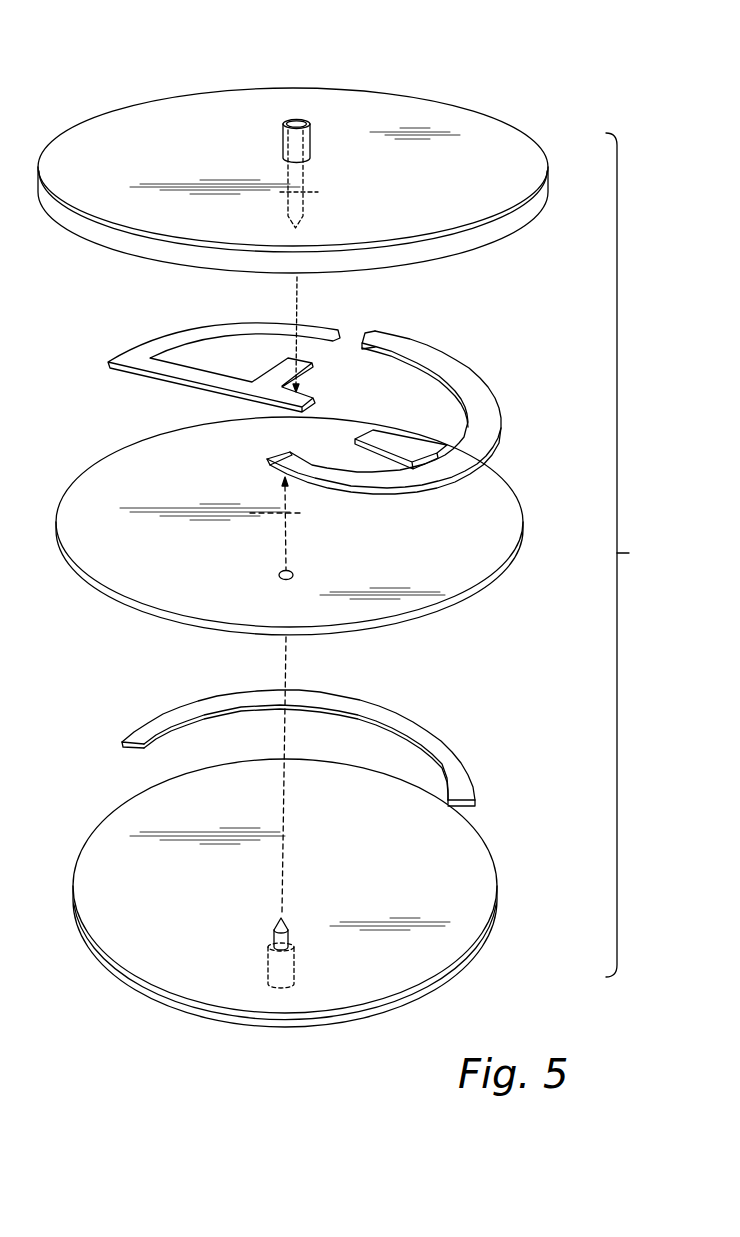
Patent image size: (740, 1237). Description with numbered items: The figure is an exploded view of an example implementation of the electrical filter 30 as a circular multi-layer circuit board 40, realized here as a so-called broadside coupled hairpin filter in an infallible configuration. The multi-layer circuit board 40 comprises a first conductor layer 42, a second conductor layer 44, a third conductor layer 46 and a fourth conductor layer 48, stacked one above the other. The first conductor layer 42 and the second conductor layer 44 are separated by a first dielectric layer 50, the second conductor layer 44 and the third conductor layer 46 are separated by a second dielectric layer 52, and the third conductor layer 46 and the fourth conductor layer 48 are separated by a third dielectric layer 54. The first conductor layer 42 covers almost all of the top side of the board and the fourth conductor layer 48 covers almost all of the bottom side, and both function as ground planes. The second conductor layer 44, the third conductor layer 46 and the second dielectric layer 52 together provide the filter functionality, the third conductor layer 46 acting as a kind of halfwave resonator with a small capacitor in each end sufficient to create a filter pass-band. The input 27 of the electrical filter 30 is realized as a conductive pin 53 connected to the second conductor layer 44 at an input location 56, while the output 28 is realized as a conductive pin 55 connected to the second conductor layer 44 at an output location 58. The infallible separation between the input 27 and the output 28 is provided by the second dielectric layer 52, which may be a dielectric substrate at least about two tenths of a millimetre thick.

The input 27 is at (298, 110).
The output 28 is at (277, 1040).
The electrical filter 30 is at (543, 67).
The multi-layer circuit board 40 is at (635, 555).
The first conductor layer 42 is at (413, 167).
The second conductor layer 44 is at (473, 388).
The third conductor layer 46 is at (458, 777).
The fourth conductor layer 48 is at (352, 1030).
The first dielectric layer 50 is at (482, 243).
The second dielectric layer 52 is at (473, 594).
The conductive pin 53 is at (284, 143).
The third dielectric layer 54 is at (422, 990).
The conductive pin 55 is at (270, 935).
The input location 56 is at (293, 394).
The output location 58 is at (282, 475).